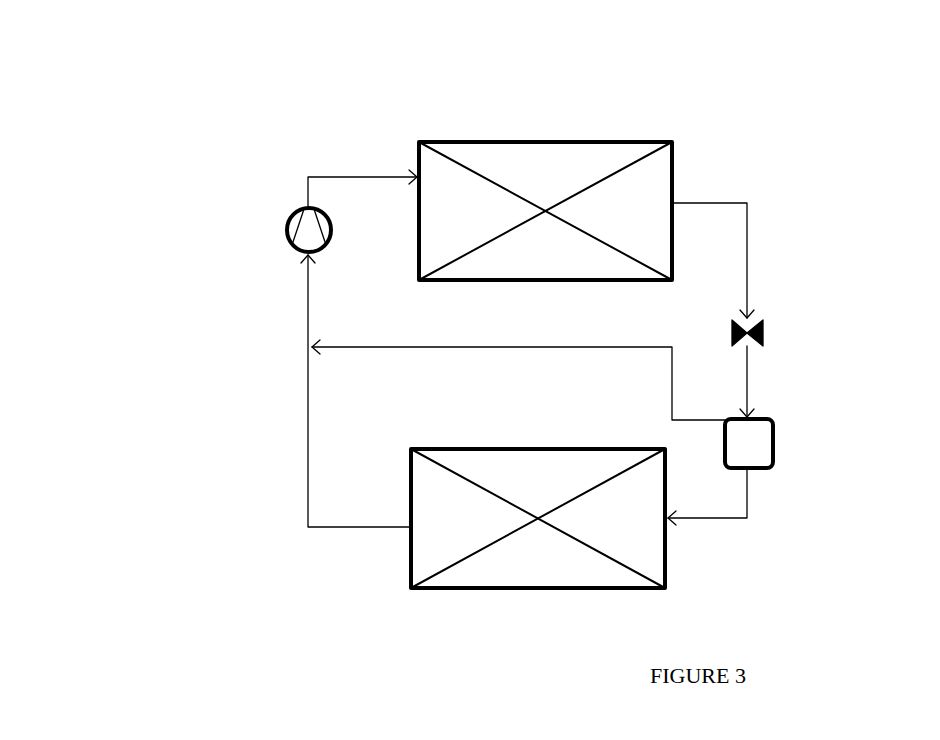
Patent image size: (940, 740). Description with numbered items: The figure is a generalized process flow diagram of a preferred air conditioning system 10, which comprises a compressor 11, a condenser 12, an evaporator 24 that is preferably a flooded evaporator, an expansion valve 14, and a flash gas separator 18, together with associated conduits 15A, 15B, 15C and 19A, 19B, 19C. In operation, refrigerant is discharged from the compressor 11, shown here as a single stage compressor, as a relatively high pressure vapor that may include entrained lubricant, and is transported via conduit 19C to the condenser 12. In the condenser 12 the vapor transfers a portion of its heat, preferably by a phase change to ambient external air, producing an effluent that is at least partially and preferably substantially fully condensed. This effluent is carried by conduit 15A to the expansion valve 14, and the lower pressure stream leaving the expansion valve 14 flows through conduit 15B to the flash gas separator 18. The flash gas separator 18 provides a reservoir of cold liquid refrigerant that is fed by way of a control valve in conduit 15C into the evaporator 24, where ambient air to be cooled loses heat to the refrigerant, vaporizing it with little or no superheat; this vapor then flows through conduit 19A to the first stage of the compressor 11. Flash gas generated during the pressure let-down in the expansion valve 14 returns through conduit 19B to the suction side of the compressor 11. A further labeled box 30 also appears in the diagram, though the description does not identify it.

The air conditioning system 10 is at (814, 64).
The compressor 11 is at (260, 191).
The condenser 12 is at (545, 161).
The expansion valve 14 is at (825, 344).
The conduit 15A is at (775, 260).
The conduit 15B is at (823, 391).
The conduit 15C is at (765, 540).
The flash gas separator 18 is at (818, 468).
The conduit 19A is at (296, 391).
The conduit 19B is at (518, 380).
The conduit 19C is at (345, 137).
The evaporator 24 is at (477, 560).
The controller 30 is at (122, 619).